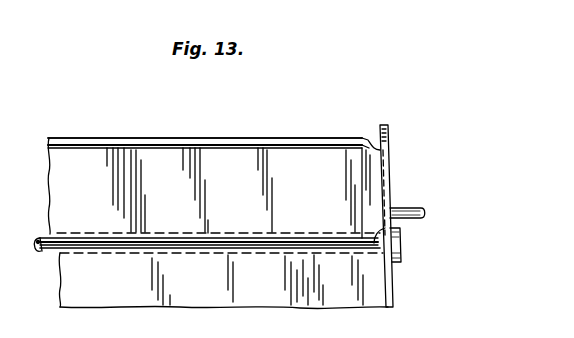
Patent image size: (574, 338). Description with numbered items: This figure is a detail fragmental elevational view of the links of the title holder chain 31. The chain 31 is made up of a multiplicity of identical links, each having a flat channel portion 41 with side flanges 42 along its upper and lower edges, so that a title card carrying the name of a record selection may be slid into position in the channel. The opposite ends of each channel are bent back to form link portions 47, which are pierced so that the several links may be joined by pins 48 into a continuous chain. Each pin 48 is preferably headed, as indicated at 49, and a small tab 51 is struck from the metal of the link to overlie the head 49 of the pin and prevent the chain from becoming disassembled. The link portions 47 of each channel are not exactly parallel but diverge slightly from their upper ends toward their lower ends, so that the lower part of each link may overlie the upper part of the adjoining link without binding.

The chain 31 is at (148, 107).
The flat channel portion 41 is at (240, 202).
The side flanges 42 is at (256, 121).
The link portions 47 is at (389, 133).
The pins 48 is at (38, 254).
The head 49 is at (400, 248).
The small tabs 51 is at (407, 208).